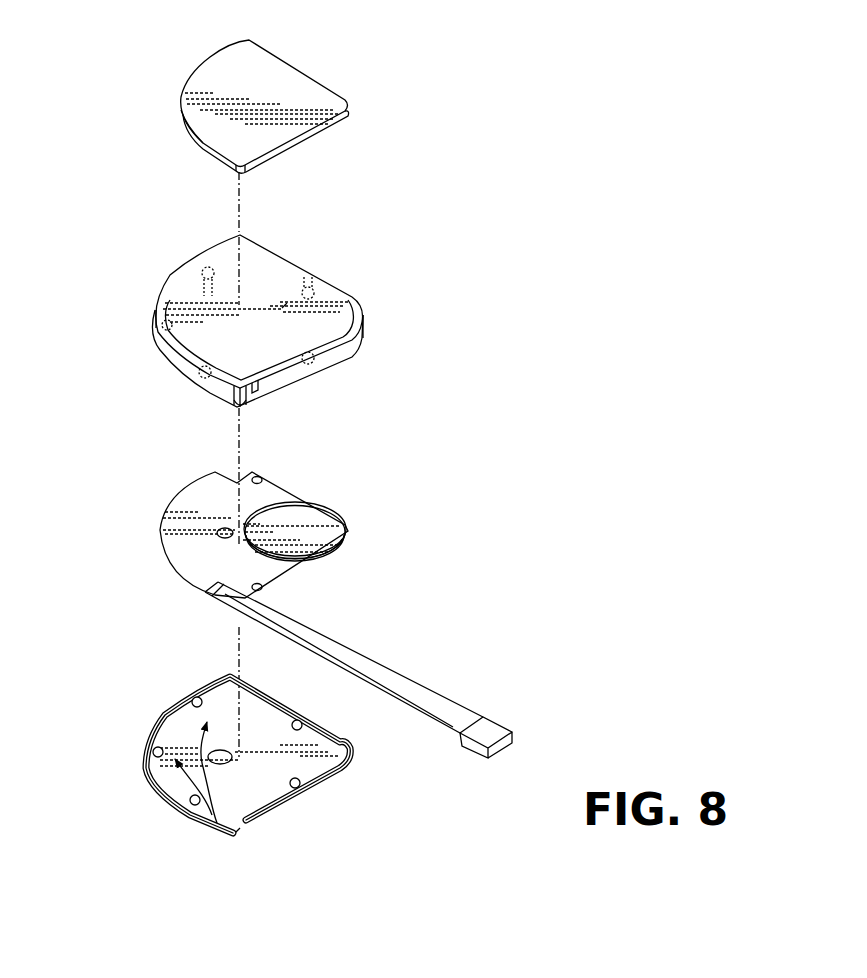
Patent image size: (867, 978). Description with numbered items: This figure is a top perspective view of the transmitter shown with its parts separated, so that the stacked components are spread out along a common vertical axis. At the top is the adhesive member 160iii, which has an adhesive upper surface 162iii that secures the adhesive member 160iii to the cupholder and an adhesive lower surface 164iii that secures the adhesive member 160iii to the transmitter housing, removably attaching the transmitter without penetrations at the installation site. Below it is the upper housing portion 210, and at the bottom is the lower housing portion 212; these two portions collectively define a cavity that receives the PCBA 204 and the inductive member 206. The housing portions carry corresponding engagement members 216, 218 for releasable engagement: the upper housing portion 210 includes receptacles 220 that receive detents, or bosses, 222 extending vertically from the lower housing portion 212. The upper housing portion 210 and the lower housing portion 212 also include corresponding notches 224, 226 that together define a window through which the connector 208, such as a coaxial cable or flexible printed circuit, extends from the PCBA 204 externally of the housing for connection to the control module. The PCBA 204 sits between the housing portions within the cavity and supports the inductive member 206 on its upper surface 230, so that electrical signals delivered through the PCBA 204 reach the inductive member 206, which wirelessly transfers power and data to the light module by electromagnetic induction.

The adhesive member 160iii is at (350, 78).
The adhesive upper surface 162iii is at (268, 68).
The adhesive lower surface 164iii is at (307, 140).
The upper housing portion 210 is at (288, 256).
The engagement member 216 is at (286, 304).
The receptacles 220 is at (207, 266).
The notch 224 is at (260, 395).
The PCBA 204 is at (156, 539).
The upper surface 230 is at (198, 492).
The inductive member 206 is at (338, 508).
The connector 208 is at (370, 663).
The lower housing portion 212 is at (285, 818).
The engagement member 218 is at (220, 826).
The detents 222 is at (196, 697).
The notch 226 is at (247, 828).